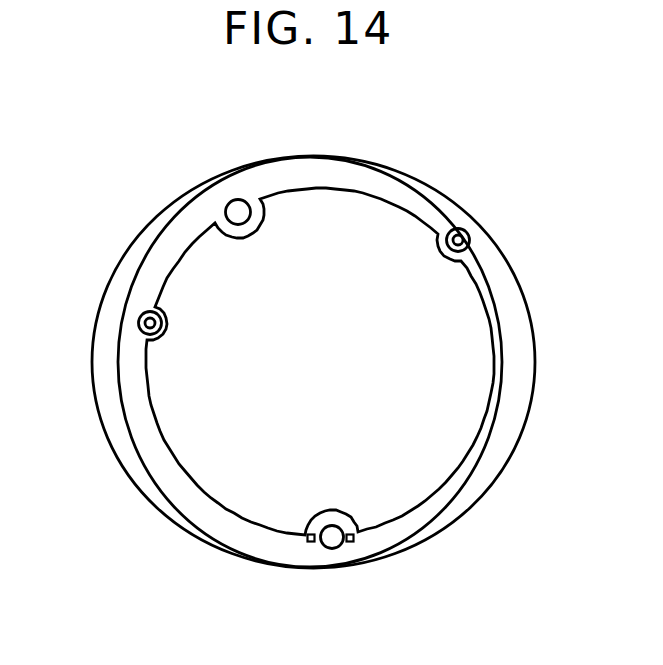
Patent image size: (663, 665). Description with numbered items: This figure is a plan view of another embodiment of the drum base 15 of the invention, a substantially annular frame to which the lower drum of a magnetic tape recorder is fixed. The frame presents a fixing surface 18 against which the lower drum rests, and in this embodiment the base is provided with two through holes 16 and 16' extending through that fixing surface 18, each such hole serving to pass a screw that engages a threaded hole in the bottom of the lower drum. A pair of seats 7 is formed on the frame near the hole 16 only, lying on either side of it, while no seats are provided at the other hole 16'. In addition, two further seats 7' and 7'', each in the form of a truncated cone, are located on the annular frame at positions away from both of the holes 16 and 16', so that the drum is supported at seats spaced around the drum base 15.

The drum base 15 is at (163, 521).
The fixing surface 18 is at (284, 176).
The through hole 16' is at (189, 168).
The seat 7' is at (96, 299).
The seat 7'' is at (498, 216).
The through hole 16 is at (402, 561).
The seats 7 is at (334, 582).